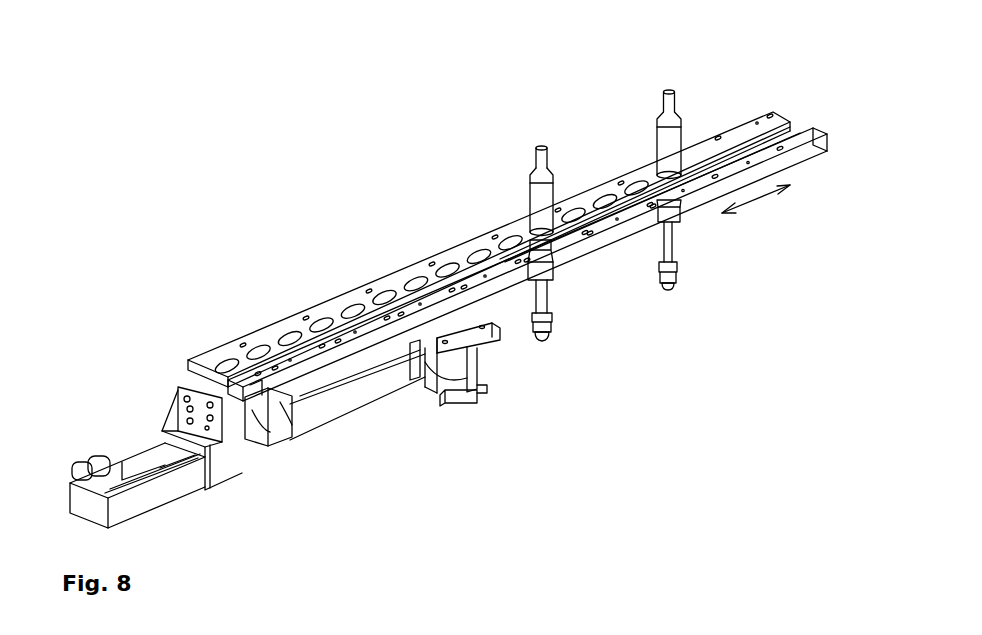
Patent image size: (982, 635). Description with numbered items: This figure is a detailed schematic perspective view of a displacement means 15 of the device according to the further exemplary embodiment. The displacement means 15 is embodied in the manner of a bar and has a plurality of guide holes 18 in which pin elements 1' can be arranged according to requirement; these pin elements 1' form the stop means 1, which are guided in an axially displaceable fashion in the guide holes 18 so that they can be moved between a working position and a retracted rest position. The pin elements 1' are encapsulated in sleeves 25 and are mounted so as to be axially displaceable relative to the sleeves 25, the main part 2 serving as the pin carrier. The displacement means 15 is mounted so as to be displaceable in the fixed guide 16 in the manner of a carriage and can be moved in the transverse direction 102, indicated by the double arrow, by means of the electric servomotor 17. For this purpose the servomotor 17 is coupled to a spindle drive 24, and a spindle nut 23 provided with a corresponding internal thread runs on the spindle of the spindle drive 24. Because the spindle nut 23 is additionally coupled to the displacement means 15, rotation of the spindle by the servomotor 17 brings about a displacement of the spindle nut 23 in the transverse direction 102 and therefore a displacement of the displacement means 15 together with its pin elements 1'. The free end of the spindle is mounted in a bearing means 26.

The main part 2 is at (723, 97).
The displacement means 15 is at (402, 293).
The guide holes 18 is at (288, 340).
The guide 16 is at (640, 175).
The sleeves 25 is at (540, 196).
The stop means 1 is at (587, 322).
The pin elements 1' is at (669, 245).
The transverse direction 102 is at (755, 219).
The spindle drive 24 is at (376, 373).
The bearing means 26 is at (487, 394).
The spindle nut 23 is at (283, 443).
The servomotor 17 is at (131, 467).